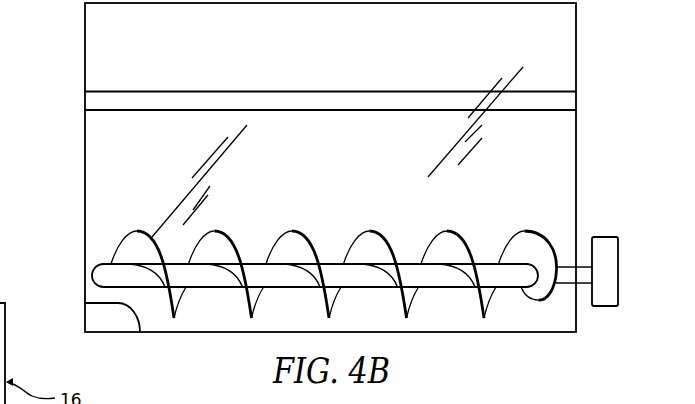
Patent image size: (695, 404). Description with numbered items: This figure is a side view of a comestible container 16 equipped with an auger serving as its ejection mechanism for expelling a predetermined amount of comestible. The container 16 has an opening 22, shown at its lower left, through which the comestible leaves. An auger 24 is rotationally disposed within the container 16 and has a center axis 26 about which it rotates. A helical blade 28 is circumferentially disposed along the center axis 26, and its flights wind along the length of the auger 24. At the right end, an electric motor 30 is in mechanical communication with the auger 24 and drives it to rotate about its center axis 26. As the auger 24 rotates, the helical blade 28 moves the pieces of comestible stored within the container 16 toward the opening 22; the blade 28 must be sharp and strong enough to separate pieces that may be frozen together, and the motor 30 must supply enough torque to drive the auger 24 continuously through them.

The container 16 is at (578, 41).
The opening 22 is at (115, 304).
The auger 24 is at (539, 223).
The center axis 26 is at (97, 273).
The helical blade 28 is at (138, 243).
The electric motor 30 is at (608, 307).